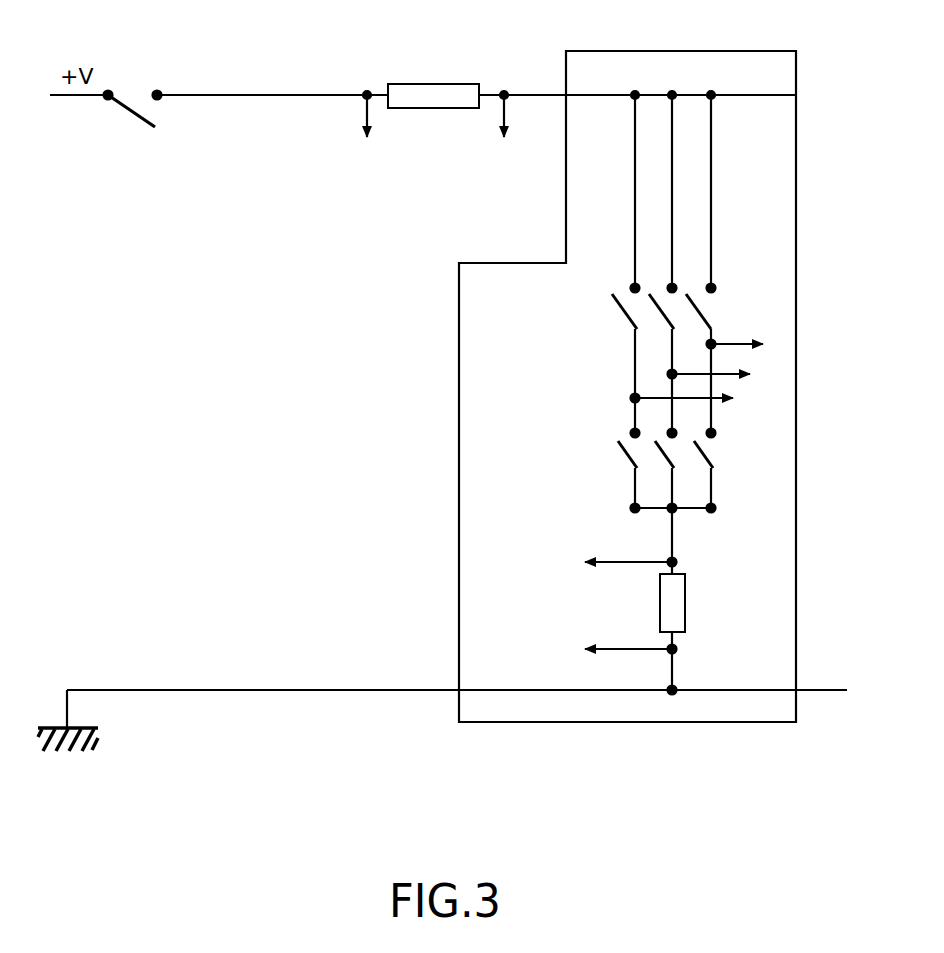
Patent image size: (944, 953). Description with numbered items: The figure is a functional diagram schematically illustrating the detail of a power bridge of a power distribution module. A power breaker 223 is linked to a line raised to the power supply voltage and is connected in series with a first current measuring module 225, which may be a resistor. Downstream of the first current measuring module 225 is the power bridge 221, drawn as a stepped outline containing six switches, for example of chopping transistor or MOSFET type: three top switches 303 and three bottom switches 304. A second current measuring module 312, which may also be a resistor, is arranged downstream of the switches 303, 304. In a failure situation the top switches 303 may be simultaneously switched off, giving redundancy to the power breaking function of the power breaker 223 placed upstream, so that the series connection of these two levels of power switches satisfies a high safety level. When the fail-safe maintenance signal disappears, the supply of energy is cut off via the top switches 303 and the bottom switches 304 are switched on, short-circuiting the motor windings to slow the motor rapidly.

The power bridge 221 is at (578, 722).
The power breaker 223 is at (133, 92).
The first current measuring module 225 is at (430, 84).
The top switches 303 is at (616, 308).
The bottom switches 304 is at (624, 451).
The second current measuring module 312 is at (686, 588).